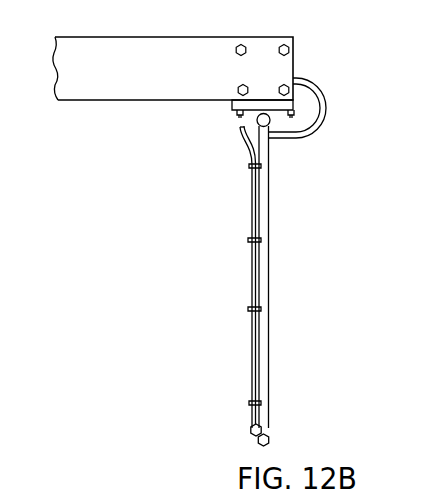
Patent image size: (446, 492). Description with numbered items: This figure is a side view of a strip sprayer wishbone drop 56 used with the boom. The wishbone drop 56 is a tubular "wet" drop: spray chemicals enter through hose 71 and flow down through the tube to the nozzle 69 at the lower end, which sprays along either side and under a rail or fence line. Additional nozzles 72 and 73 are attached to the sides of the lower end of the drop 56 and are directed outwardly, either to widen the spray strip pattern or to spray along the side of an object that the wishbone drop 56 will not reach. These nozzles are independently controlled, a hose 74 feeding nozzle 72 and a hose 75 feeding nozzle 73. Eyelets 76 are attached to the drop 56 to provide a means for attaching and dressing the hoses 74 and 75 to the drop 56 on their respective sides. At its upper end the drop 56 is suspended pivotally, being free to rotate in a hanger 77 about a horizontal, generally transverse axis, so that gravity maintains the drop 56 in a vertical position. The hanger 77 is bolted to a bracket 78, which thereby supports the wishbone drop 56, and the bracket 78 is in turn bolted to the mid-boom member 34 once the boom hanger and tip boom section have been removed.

The mid-boom member 34 is at (141, 37).
The bracket 78 is at (232, 105).
The hose 71 is at (326, 111).
The hanger 77 is at (256, 120).
The wishbone drop 56 is at (269, 220).
The hose 75 is at (233, 277).
The hose 74 is at (252, 206).
The eyelets 76 is at (235, 274).
The nozzle 72 is at (249, 424).
The nozzle 73 is at (250, 431).
The nozzle 69 is at (270, 443).